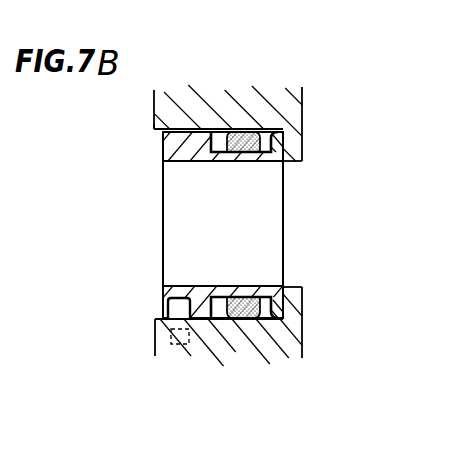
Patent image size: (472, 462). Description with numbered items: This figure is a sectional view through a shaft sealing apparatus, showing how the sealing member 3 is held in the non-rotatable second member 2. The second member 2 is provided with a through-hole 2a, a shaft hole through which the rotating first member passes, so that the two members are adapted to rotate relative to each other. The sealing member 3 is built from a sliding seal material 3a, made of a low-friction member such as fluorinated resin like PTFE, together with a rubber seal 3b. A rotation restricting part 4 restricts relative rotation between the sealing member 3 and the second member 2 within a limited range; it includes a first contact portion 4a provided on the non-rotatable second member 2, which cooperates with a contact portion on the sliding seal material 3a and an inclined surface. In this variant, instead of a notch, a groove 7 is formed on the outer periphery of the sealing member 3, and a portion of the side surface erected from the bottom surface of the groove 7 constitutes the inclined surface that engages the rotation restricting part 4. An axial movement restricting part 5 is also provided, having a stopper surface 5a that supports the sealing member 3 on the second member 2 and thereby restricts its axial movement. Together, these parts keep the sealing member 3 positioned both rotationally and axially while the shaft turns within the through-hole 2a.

The second member 2 is at (293, 108).
The through-hole 2a is at (156, 130).
The sealing member 3 is at (292, 223).
The sliding seal material 3a is at (163, 298).
The rubber seal 3b is at (241, 321).
The rotation restricting part 4 is at (184, 346).
The first contact portion 4a is at (165, 338).
The axial movement restricting part 5 is at (285, 304).
The stopper surface 5a is at (278, 287).
The groove 7 is at (163, 308).